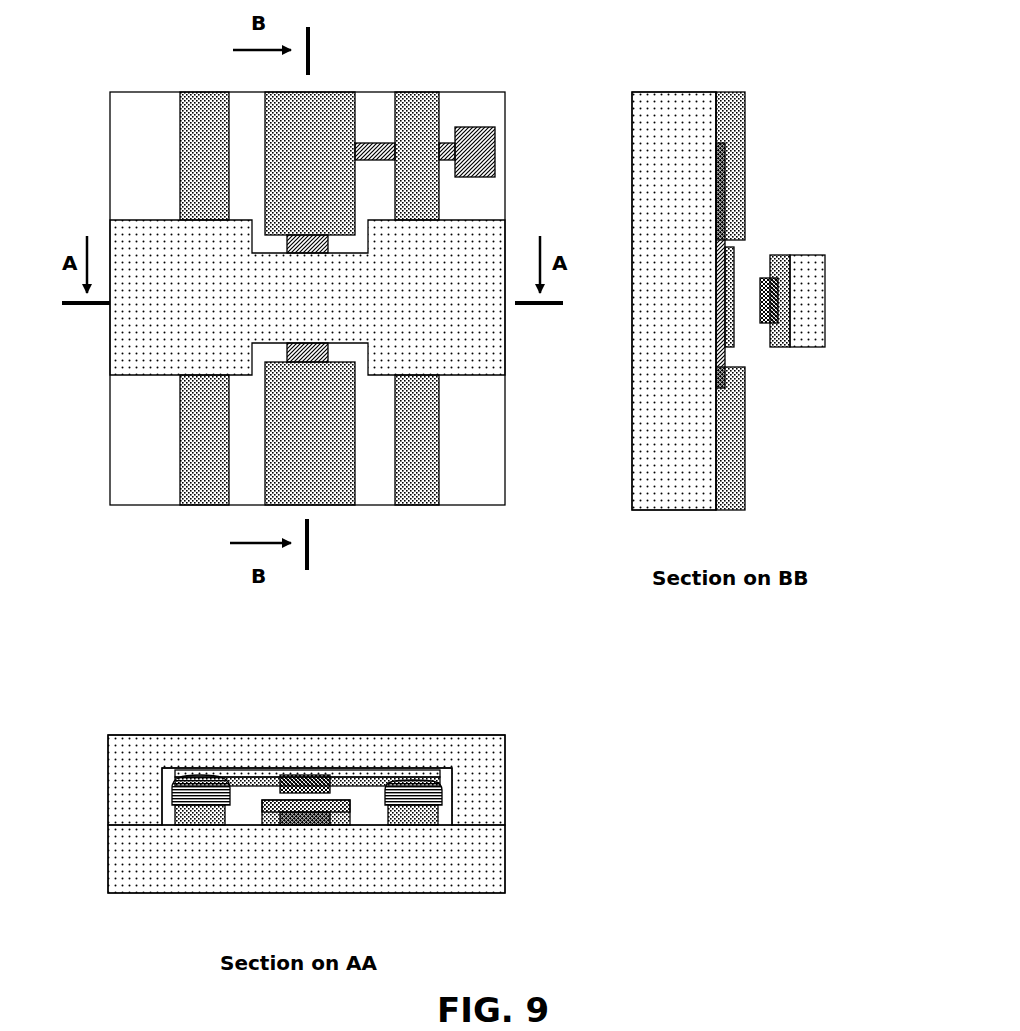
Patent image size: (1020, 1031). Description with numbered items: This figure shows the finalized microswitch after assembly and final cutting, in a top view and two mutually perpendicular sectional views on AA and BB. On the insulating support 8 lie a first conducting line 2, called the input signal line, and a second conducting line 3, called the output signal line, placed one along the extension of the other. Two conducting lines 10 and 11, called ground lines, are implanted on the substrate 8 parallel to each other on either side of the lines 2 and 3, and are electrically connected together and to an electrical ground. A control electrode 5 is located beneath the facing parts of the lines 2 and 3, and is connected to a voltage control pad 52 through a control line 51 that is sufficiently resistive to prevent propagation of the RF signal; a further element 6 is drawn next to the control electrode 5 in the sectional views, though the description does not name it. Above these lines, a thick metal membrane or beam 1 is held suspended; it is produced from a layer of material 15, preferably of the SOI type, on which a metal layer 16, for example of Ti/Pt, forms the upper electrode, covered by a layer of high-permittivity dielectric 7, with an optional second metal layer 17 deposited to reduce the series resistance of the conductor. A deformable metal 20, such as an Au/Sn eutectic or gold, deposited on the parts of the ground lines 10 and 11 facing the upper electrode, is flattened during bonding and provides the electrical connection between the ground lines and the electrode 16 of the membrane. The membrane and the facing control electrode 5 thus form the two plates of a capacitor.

The membrane 1 is at (520, 228).
The input line 2 is at (312, 468).
The output line 3 is at (328, 112).
The control electrode 5 is at (722, 372).
The contact pad 6 is at (733, 345).
The layer of high-permittivity dielectric 7 is at (764, 277).
The insulating support 8 is at (152, 466).
The ground line 10 is at (415, 478).
The ground line 11 is at (205, 482).
The layer of material 15 is at (476, 766).
The metal layer 16 is at (790, 338).
The second metal layer 17 is at (776, 345).
The deformable metal 20 is at (470, 800).
The control line 51 is at (378, 150).
The control pad 52 is at (470, 135).